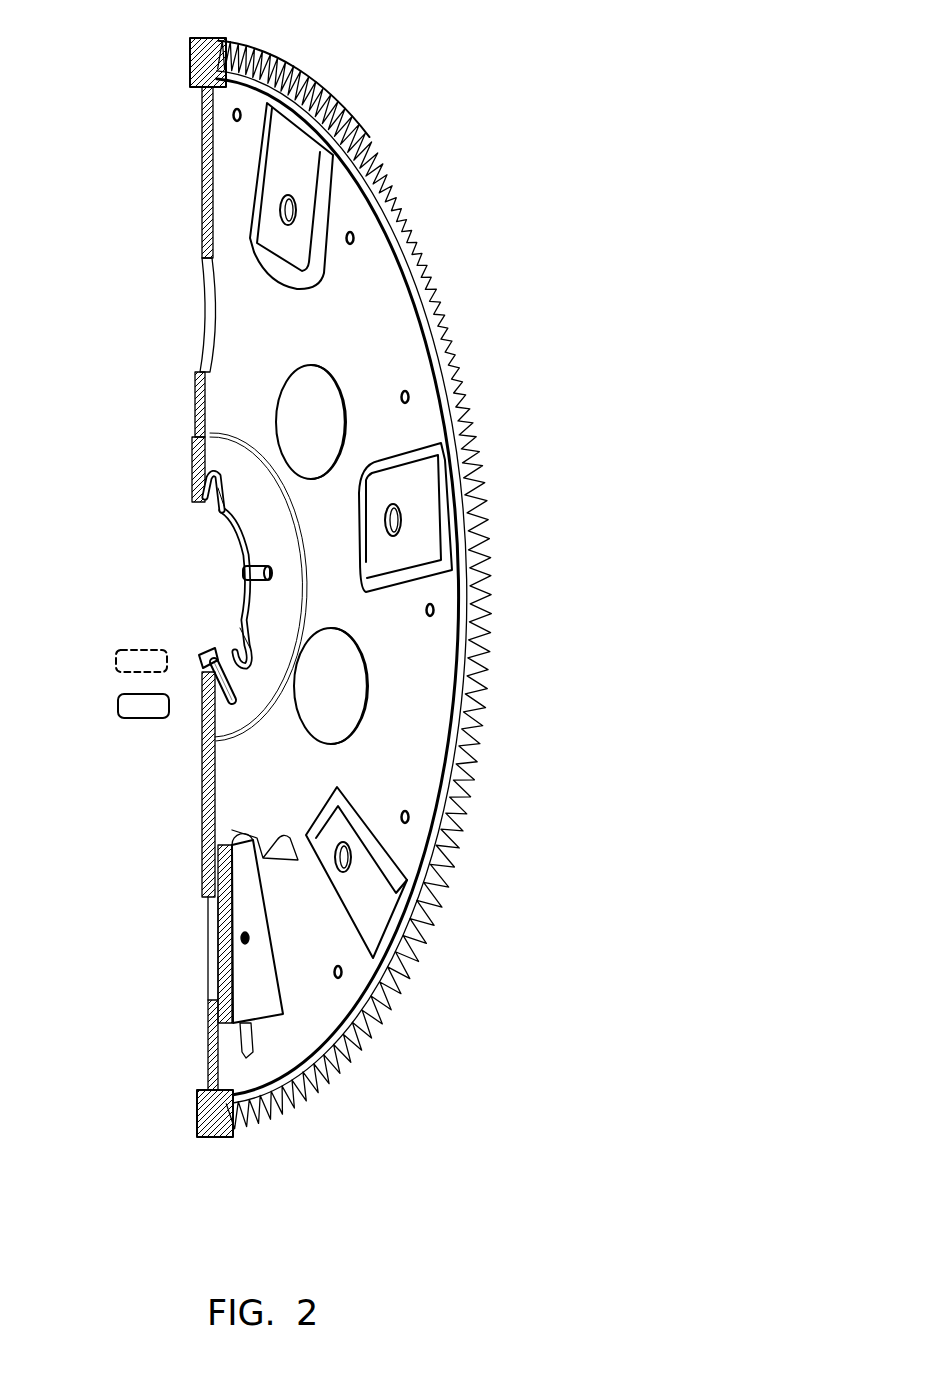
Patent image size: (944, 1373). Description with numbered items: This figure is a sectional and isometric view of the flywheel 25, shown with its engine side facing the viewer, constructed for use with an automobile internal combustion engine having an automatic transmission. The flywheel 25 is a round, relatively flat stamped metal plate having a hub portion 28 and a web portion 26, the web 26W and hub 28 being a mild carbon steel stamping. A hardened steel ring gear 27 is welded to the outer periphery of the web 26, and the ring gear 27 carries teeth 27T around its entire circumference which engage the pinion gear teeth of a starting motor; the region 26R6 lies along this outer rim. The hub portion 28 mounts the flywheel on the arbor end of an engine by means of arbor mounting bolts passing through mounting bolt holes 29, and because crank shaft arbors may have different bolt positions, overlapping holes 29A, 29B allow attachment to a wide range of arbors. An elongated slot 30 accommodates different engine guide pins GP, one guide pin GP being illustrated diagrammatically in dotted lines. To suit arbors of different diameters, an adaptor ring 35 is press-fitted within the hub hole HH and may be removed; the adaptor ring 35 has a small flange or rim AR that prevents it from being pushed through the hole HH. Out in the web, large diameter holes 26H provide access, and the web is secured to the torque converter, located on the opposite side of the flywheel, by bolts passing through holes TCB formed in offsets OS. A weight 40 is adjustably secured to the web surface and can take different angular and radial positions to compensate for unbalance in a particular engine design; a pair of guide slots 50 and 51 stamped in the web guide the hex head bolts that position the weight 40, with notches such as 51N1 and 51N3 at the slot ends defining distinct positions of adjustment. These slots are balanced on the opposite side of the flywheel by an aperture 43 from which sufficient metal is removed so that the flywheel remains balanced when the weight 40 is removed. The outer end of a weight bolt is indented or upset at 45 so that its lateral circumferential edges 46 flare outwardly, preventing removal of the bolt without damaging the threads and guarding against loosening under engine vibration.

The flywheel 25 is at (605, 565).
The web portion 26 is at (403, 763).
The web 26W is at (352, 300).
The large diameter holes 26H is at (318, 395).
The disc rim region 26R6 is at (400, 983).
The ring gear 27 is at (220, 1138).
The teeth 27T is at (443, 828).
The hub portion 28 is at (197, 410).
The mounting bolt holes 29 is at (247, 573).
The overlapping hole 29A is at (215, 478).
The overlapping hole 29B is at (222, 500).
The elongated slot 30 is at (227, 682).
The adaptor ring 35 is at (205, 648).
The weight 40 is at (240, 983).
The aperture 43 is at (207, 318).
The indented or upset end 45 is at (243, 940).
The circumferential edges 46 is at (245, 950).
The guide slot 50 is at (232, 845).
The guide slot 51 is at (270, 840).
The notch 51N1 is at (248, 1055).
The notch 51N3 is at (300, 850).
The offsets OS is at (288, 148).
The torque converter bolt holes TCB is at (292, 205).
The hub hole HH is at (197, 585).
The guide pin GP is at (115, 672).
The flange or rim AR is at (200, 655).